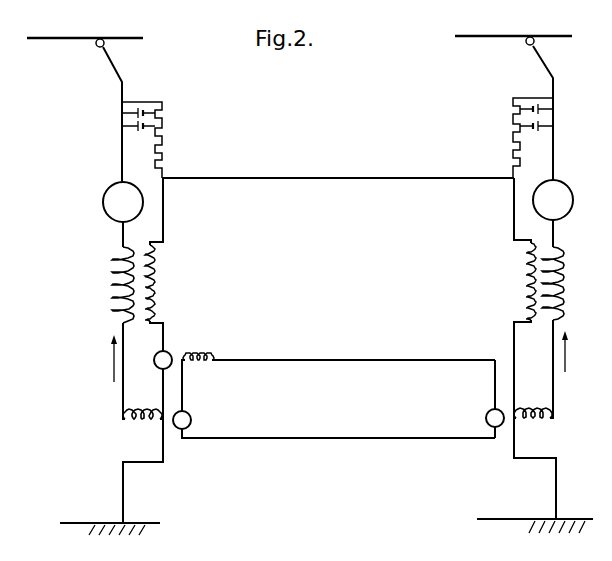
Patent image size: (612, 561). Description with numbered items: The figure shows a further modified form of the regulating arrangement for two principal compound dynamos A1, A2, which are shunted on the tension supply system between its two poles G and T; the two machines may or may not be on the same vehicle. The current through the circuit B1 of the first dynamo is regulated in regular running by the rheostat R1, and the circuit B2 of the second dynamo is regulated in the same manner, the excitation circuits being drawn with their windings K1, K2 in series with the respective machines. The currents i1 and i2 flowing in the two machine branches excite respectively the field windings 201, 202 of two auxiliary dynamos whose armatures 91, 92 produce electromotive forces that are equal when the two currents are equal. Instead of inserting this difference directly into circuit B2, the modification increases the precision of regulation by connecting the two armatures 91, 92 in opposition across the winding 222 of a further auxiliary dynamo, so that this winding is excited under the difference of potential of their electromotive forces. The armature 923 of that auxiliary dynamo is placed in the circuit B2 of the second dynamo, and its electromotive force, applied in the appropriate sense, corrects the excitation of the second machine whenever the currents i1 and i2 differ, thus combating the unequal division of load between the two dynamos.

The pole of the tension supply system T is at (299, 29).
The electric circuit of the second dynamo B2 is at (157, 287).
The second principal compound dynamo A2 is at (111, 203).
The compensating coil of second station K2 is at (112, 285).
The armature of the auxiliary dynamo 923 is at (170, 352).
The armature of the second auxiliary dynamo 92 is at (191, 420).
The field winding of the auxiliary dynamo 222 is at (213, 357).
The field winding 202 is at (130, 427).
The current of the second dynamo i2 is at (107, 358).
The pole of the tension supply system G is at (332, 538).
The first rheostat R1 is at (520, 138).
The first principal compound dynamo A1 is at (544, 205).
The electric circuit of the first dynamo B1 is at (516, 281).
The compensating coil of first station K1 is at (565, 288).
The armature of the first auxiliary dynamo 91 is at (485, 419).
The coil of first station 201 is at (545, 420).
The current of the first dynamo i1 is at (575, 357).